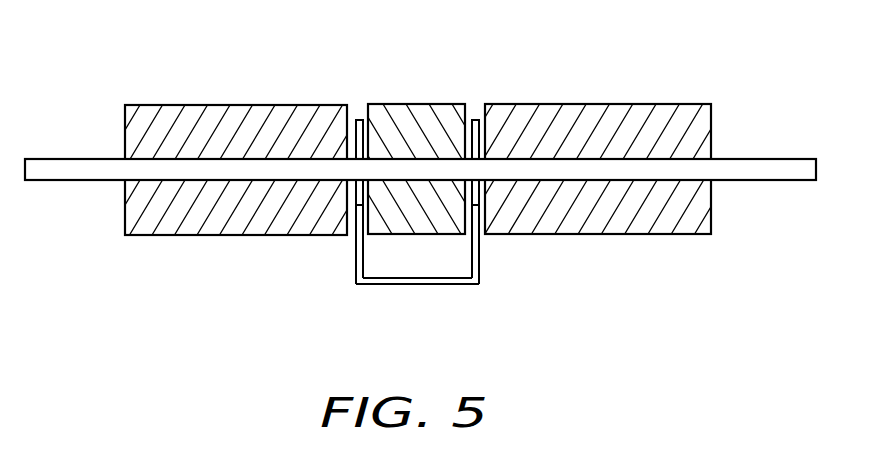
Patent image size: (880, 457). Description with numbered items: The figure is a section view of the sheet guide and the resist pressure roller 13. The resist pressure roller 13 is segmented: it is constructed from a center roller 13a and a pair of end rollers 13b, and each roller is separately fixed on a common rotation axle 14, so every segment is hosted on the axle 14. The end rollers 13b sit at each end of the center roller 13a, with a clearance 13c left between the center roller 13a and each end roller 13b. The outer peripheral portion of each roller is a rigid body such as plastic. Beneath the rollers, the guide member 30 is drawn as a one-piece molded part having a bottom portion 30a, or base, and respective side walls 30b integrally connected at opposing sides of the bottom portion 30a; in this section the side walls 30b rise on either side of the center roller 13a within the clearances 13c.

The resist pressure roller 13 is at (417, 117).
The center roller 13a is at (416, 110).
The end rollers 13b is at (200, 112).
The clearance 13c is at (360, 108).
The rotation axle 14 is at (782, 158).
The guide member 30 is at (417, 274).
The bottom portion 30a is at (424, 267).
The side walls 30b is at (356, 264).